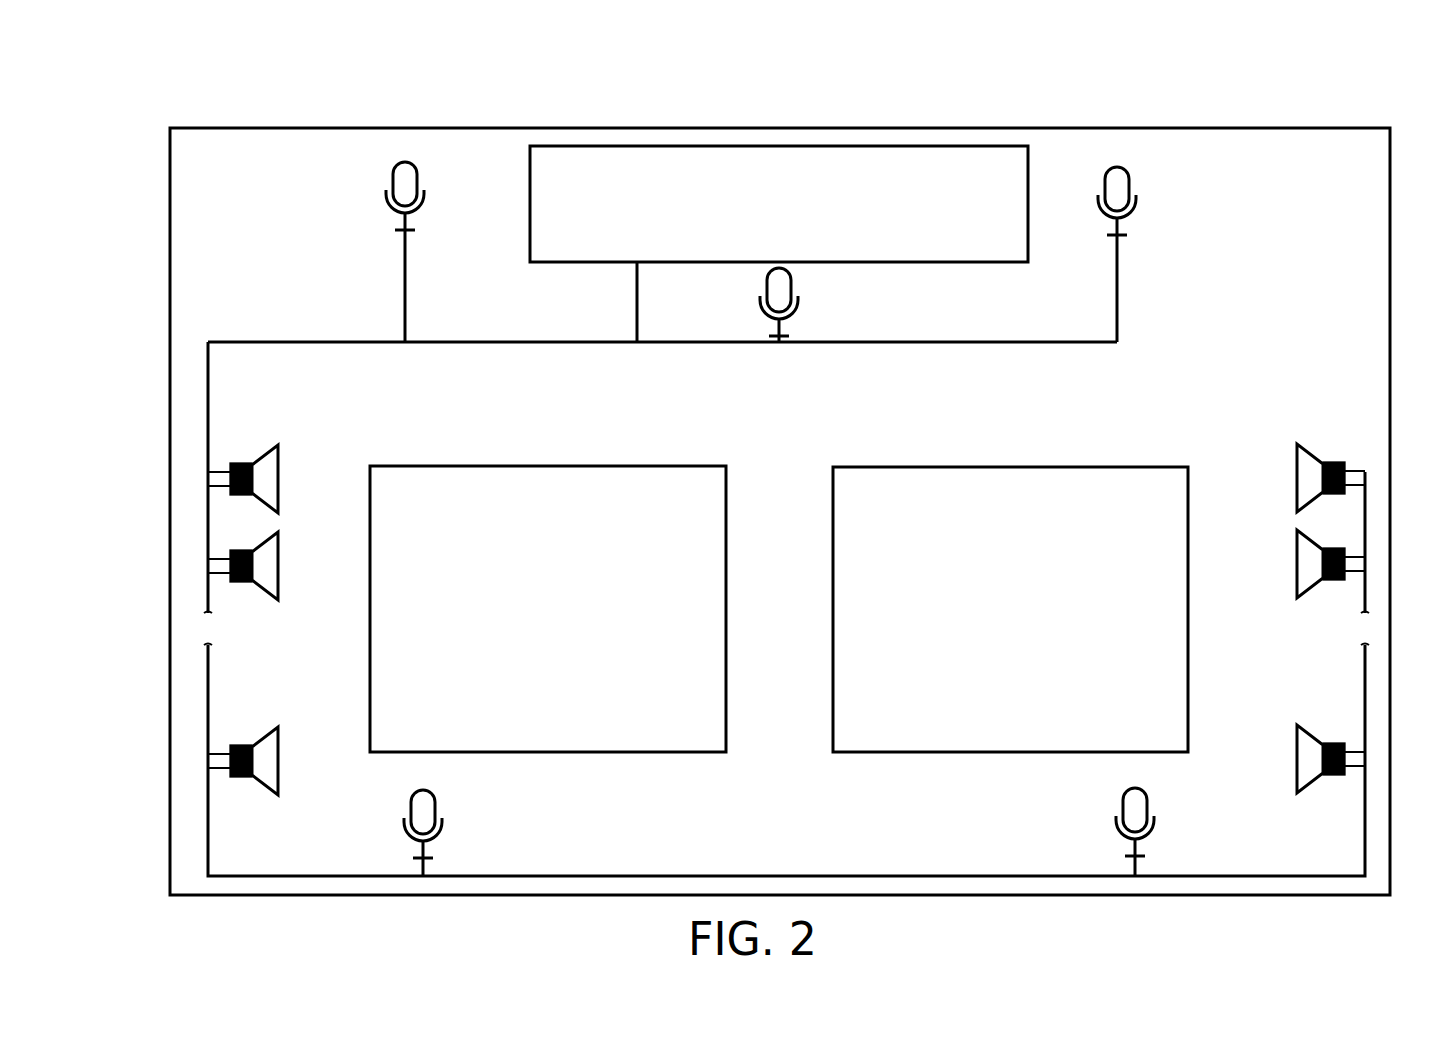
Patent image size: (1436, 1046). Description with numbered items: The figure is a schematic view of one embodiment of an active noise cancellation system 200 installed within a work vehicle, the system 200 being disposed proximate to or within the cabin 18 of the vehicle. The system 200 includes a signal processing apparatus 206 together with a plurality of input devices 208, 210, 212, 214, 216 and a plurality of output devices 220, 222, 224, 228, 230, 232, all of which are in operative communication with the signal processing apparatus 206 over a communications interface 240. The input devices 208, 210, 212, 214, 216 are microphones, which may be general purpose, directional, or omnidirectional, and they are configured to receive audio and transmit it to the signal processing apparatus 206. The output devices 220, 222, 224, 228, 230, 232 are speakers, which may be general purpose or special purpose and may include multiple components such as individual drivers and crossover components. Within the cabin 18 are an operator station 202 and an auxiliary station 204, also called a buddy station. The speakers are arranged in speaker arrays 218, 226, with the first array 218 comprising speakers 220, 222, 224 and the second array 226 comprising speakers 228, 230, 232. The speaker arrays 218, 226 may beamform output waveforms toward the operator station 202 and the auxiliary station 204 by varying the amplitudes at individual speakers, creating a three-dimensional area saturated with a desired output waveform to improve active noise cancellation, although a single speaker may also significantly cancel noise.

The active noise cancellation system 200 is at (148, 76).
The cabin 18 is at (1368, 128).
The signal processing apparatus 206 is at (973, 146).
The communications interface 240 is at (336, 342).
The operator station 202 is at (707, 466).
The auxiliary station 204 is at (1165, 467).
The input device 208 is at (400, 172).
The input device 210 is at (770, 288).
The input device 212 is at (1128, 180).
The input device 214 is at (436, 798).
The input device 216 is at (1127, 795).
The speaker array 218 is at (262, 400).
The output device 220 is at (278, 447).
The output device 222 is at (278, 535).
The output device 224 is at (277, 730).
The speaker array 226 is at (1333, 375).
The output device 228 is at (1297, 445).
The output device 230 is at (1297, 534).
The output device 232 is at (1297, 729).